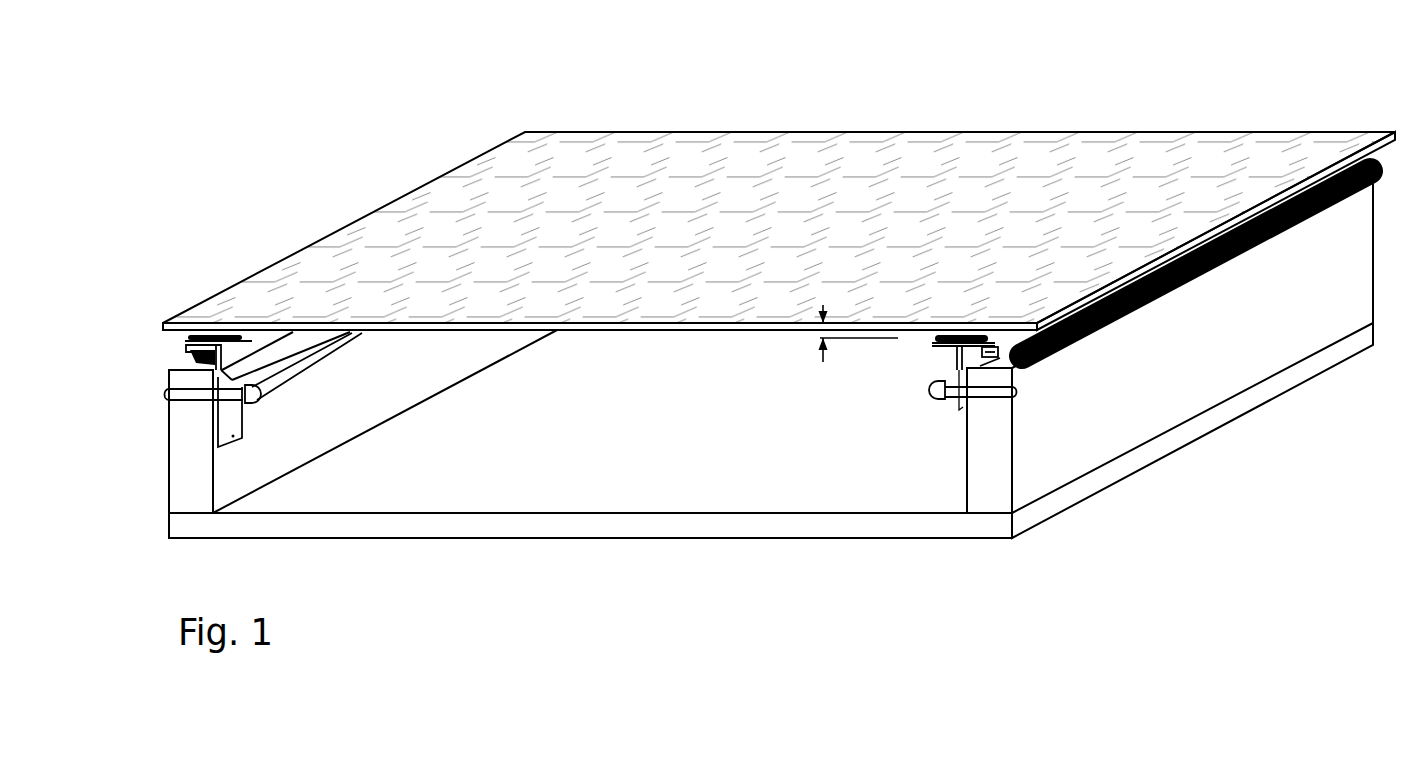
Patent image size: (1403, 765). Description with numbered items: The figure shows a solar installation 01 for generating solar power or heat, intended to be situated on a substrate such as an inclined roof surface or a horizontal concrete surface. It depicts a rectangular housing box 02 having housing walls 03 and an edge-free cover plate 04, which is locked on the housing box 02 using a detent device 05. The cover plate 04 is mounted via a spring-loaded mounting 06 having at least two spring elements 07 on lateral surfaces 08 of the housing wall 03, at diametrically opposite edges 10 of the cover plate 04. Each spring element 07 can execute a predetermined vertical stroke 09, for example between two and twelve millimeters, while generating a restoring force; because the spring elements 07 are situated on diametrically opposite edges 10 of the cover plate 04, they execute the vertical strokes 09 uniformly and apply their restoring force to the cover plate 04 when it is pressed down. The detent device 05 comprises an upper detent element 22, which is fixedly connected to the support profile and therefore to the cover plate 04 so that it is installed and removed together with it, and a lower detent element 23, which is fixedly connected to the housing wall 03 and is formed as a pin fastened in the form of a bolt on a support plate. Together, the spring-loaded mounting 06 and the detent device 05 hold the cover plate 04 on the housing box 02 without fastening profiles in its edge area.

The solar installation 01 is at (685, 92).
The housing box 02 is at (597, 485).
The housing wall 03 is at (187, 443).
The cover plate 04 is at (802, 195).
The detent device 05 is at (591, 403).
The upper detent element 22 is at (591, 403).
The lower detent element 23 is at (947, 410).
The spring-loaded mounting 06 is at (153, 362).
The spring element 07 is at (178, 362).
The lateral surface 08 is at (205, 372).
The vertical stroke 09 is at (818, 337).
The edge 10 is at (1173, 242).